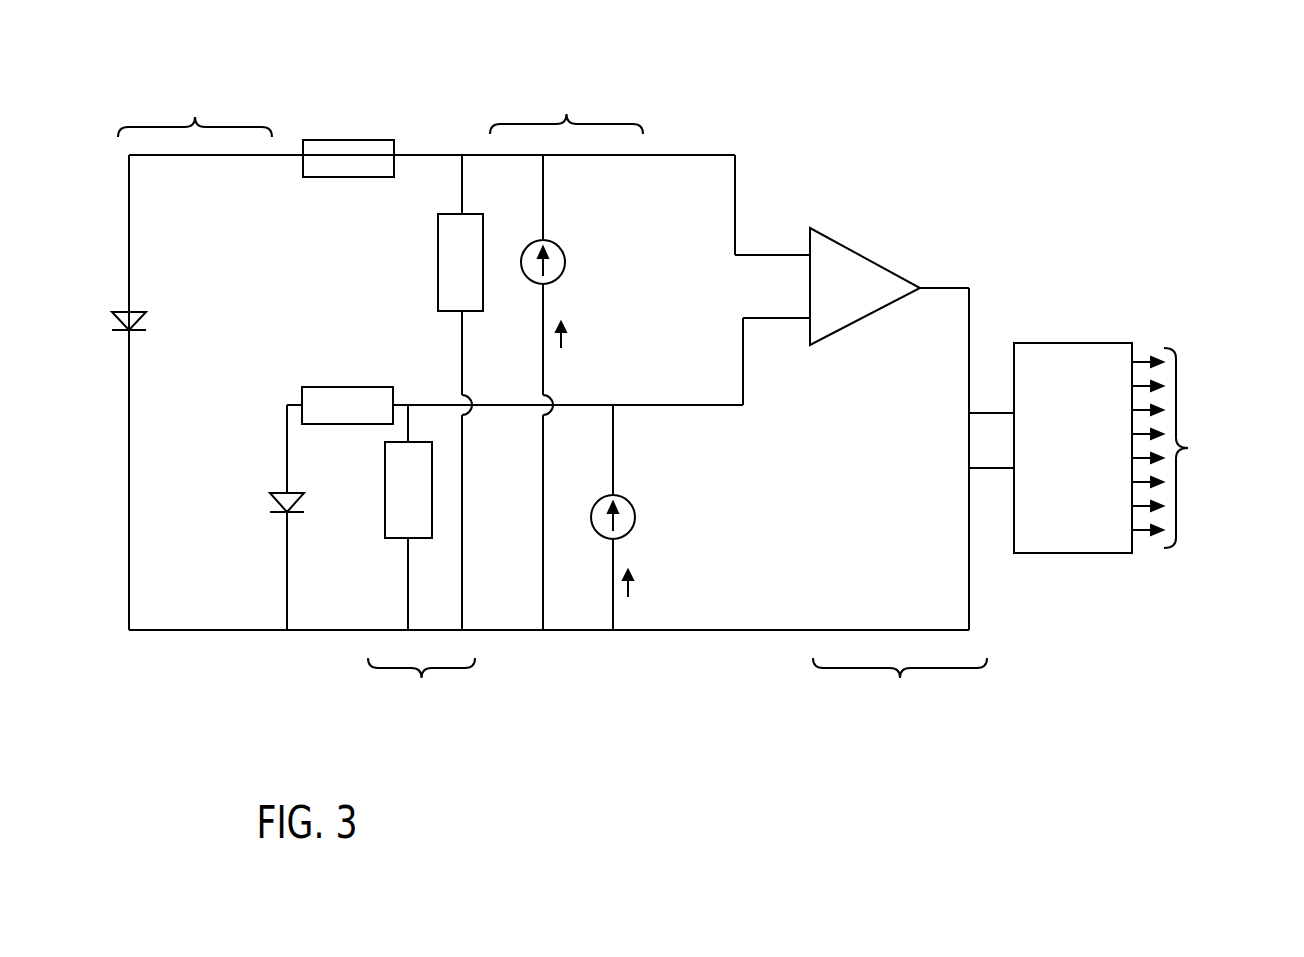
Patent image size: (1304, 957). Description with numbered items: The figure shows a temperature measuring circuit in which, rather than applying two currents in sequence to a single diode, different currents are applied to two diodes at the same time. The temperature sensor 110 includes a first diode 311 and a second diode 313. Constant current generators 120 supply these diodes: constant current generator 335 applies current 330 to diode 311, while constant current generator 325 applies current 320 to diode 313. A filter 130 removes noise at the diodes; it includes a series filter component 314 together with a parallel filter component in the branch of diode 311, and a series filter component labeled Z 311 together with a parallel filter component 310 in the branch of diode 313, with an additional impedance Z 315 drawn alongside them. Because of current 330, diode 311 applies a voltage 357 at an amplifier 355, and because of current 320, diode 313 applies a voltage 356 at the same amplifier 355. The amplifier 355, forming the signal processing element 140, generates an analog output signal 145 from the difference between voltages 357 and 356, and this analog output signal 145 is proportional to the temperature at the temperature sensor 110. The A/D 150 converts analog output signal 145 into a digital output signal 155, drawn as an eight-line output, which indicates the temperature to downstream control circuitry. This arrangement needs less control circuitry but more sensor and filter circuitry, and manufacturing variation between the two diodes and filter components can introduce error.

The temperature sensor 110 is at (195, 93).
The constant current generators 120 is at (565, 82).
The filter 130 is at (421, 700).
The signal processing element 140 is at (903, 700).
The analog output signal 145 is at (935, 431).
The A/D 150 is at (1073, 448).
The digital output signal 155 is at (1210, 448).
The parallel filter component 310 is at (408, 490).
The diode 311 is at (252, 368).
The diode 313 is at (264, 518).
The series filter component 314 is at (348, 158).
The impedance Z315 315 is at (460, 262).
The current 320 is at (655, 592).
The constant current generator 325 is at (635, 522).
The current 330 is at (588, 343).
The constant current generator 335 is at (569, 267).
The amplifier 355 is at (866, 316).
The voltage 356 is at (776, 334).
The voltage 357 is at (772, 240).